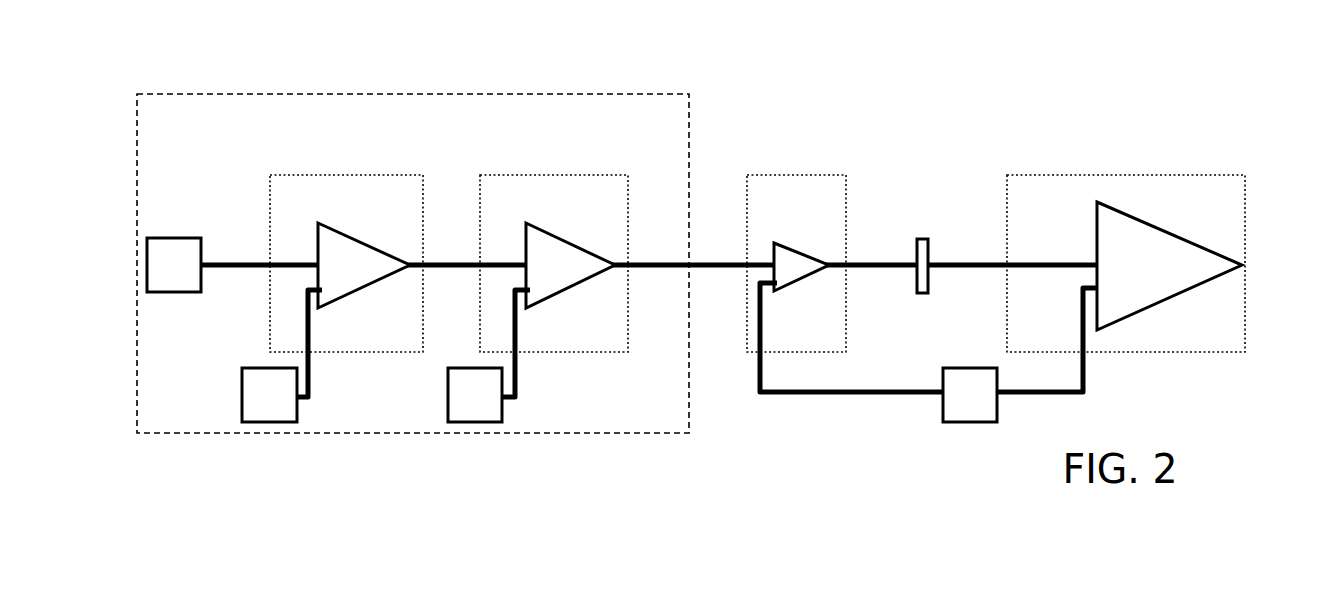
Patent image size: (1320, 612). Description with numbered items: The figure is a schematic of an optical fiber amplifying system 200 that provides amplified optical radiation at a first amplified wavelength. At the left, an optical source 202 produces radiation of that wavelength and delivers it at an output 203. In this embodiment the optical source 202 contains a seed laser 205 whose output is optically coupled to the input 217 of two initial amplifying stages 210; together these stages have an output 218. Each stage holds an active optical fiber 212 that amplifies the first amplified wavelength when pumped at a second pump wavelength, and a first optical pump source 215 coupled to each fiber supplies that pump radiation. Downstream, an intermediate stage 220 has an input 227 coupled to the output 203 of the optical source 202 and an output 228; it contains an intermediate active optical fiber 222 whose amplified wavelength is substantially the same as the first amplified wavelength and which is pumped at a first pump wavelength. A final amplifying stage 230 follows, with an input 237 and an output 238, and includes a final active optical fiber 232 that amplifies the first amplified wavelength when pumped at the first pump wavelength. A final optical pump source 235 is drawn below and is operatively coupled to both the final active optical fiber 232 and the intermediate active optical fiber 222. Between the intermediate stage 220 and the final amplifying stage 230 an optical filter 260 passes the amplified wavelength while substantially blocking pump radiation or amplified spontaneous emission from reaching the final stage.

The optical fiber amplifying system 200 is at (1262, 76).
The optical source 202 is at (168, 94).
The output of the optical source 203 is at (702, 243).
The seed laser 205 is at (174, 265).
The initial amplifying stage 210 is at (348, 175).
The active optical fiber 212 is at (466, 265).
The first optical pump source 215 is at (386, 356).
The input of the first amplifying stages 217 is at (258, 248).
The output of the first amplifying stages 218 is at (640, 246).
The intermediate stage 220 is at (794, 175).
The intermediate active optical fiber 222 is at (804, 282).
The input of the intermediate stage 227 is at (740, 281).
The output of the intermediate stage 228 is at (856, 279).
The final amplifying stage 230 is at (1133, 175).
The final active optical fiber 232 is at (1169, 266).
The final optical pump source 235 is at (928, 352).
The input of the final amplifying stage 237 is at (996, 250).
The output of the final amplifying stage 238 is at (1261, 246).
The optical filter 260 is at (920, 240).